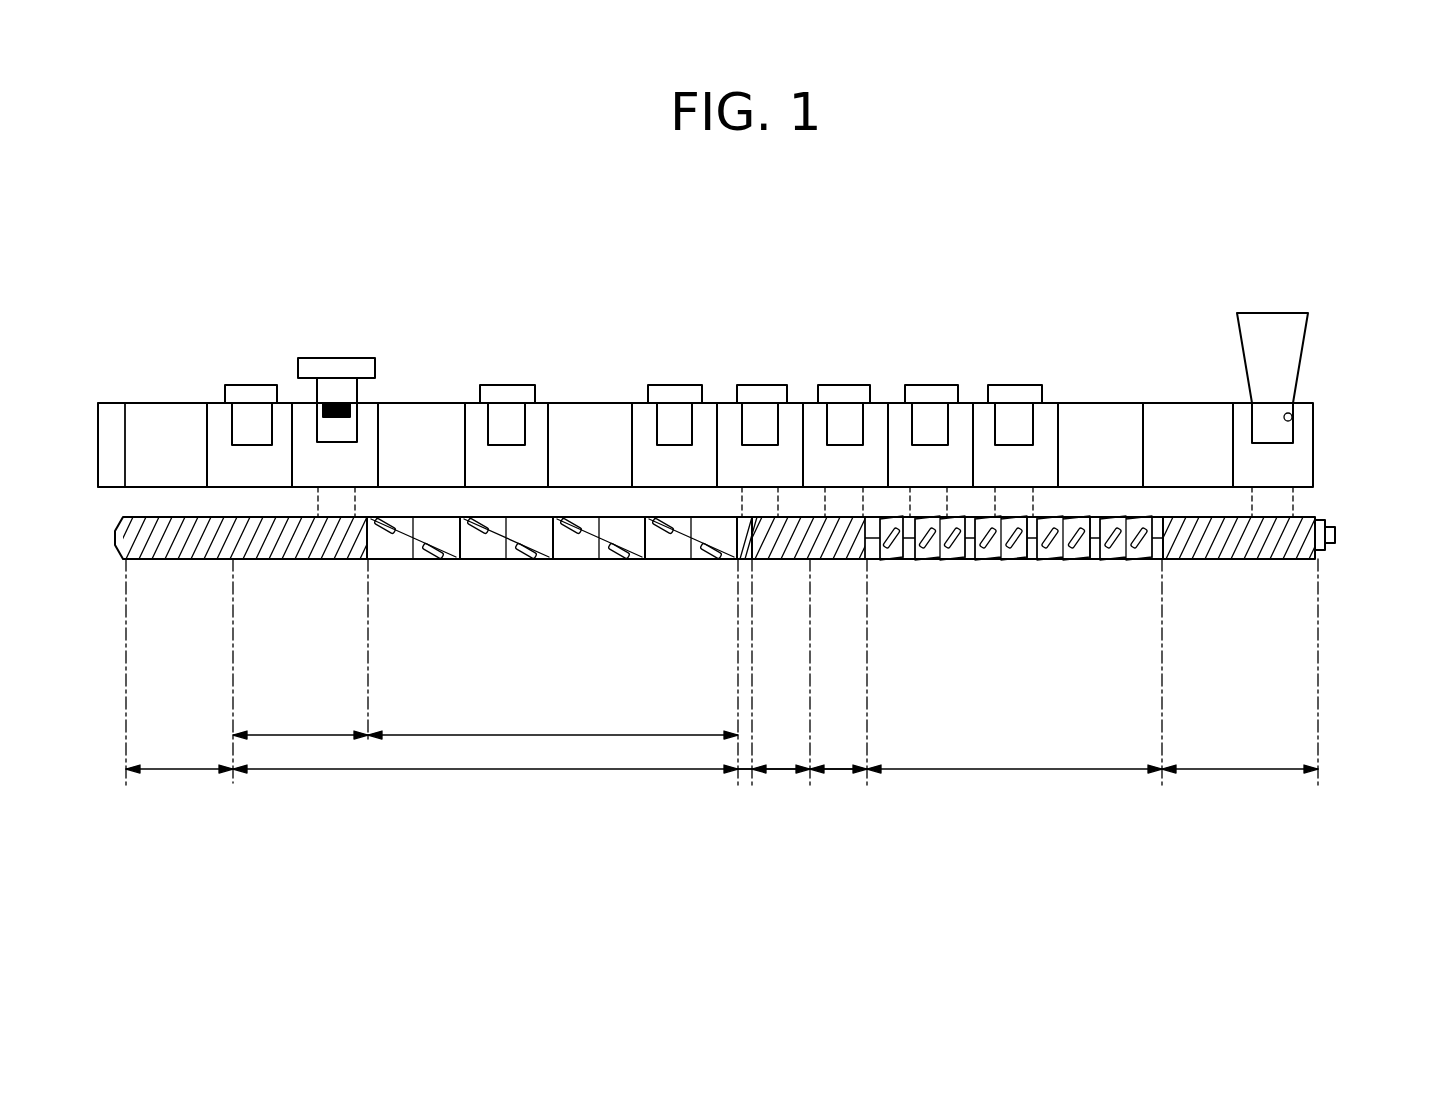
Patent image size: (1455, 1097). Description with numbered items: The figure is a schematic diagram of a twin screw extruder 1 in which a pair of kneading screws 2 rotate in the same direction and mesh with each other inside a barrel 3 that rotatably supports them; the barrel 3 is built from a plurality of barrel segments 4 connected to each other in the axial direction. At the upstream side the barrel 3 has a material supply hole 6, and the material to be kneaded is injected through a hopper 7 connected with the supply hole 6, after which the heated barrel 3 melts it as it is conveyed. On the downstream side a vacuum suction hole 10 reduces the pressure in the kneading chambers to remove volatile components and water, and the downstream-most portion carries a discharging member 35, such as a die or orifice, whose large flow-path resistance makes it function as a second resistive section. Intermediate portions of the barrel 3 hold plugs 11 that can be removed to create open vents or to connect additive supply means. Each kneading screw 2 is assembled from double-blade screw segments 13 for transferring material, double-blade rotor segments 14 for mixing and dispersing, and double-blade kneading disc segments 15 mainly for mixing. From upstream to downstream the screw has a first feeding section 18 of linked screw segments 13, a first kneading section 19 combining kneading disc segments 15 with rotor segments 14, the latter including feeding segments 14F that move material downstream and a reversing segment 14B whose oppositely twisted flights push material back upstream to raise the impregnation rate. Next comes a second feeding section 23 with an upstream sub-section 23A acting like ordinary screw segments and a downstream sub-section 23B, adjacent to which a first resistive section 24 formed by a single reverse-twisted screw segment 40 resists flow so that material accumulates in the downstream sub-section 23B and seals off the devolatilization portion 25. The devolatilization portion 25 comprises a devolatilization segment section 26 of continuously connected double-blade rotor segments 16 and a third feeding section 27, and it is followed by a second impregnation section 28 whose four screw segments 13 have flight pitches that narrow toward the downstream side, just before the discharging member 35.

The twin screw extruder 1 is at (1015, 333).
The kneading screw 2 is at (1343, 535).
The barrel 3 is at (1317, 450).
The barrel segment 4 is at (418, 425).
The material supply hole 6 is at (1292, 418).
The hopper 7 is at (1285, 348).
The vacuum suction hole 10 is at (335, 365).
The plug 11 is at (757, 392).
The double-blade screw segment 13 is at (187, 560).
The double-blade rotor segment 14 is at (1140, 664).
The reversing segment 14B is at (892, 560).
The feeding segment 14F is at (985, 560).
The double-blade kneading disc segment 15 is at (1090, 561).
The double-blade rotor segment 16 is at (492, 560).
The first feeding section 18 is at (1243, 770).
The first kneading section 19 is at (1018, 770).
The second feeding section 23 is at (905, 858).
The upstream sub-section 23A is at (838, 772).
The downstream sub-section 23B is at (777, 772).
The first resistive section 24 is at (738, 770).
The devolatilization portion 25 is at (512, 770).
The devolatilization segment section 26 is at (540, 735).
The third feeding section 27 is at (307, 735).
The second impregnation section 28 is at (178, 770).
The discharging member 35 is at (112, 412).
The screw segment 40 is at (742, 560).